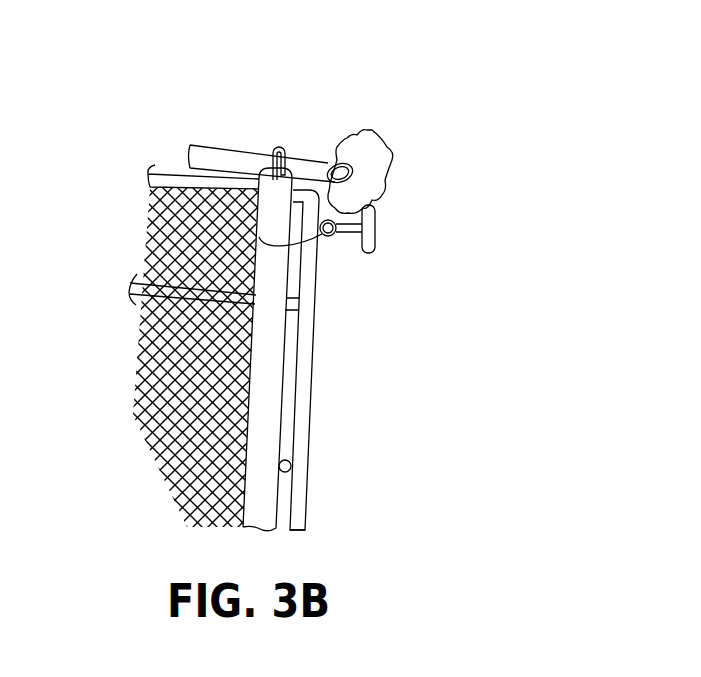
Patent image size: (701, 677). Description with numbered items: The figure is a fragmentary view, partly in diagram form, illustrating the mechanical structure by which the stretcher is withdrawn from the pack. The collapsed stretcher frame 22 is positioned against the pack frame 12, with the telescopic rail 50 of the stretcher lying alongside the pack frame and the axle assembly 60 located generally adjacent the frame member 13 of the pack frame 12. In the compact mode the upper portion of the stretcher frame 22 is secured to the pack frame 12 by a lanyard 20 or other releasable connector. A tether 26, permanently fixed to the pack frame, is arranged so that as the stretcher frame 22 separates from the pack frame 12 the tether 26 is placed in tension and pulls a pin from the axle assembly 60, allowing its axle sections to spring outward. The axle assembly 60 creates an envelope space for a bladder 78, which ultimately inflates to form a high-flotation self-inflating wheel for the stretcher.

The pack frame 12 is at (302, 505).
The frame member 13 is at (168, 185).
The lanyard 20 is at (375, 223).
The stretcher frame 22 is at (307, 355).
The tether 26 is at (292, 463).
The telescopic rail 50 is at (268, 274).
The axle assembly 60 is at (243, 141).
The bladder 78 is at (373, 168).